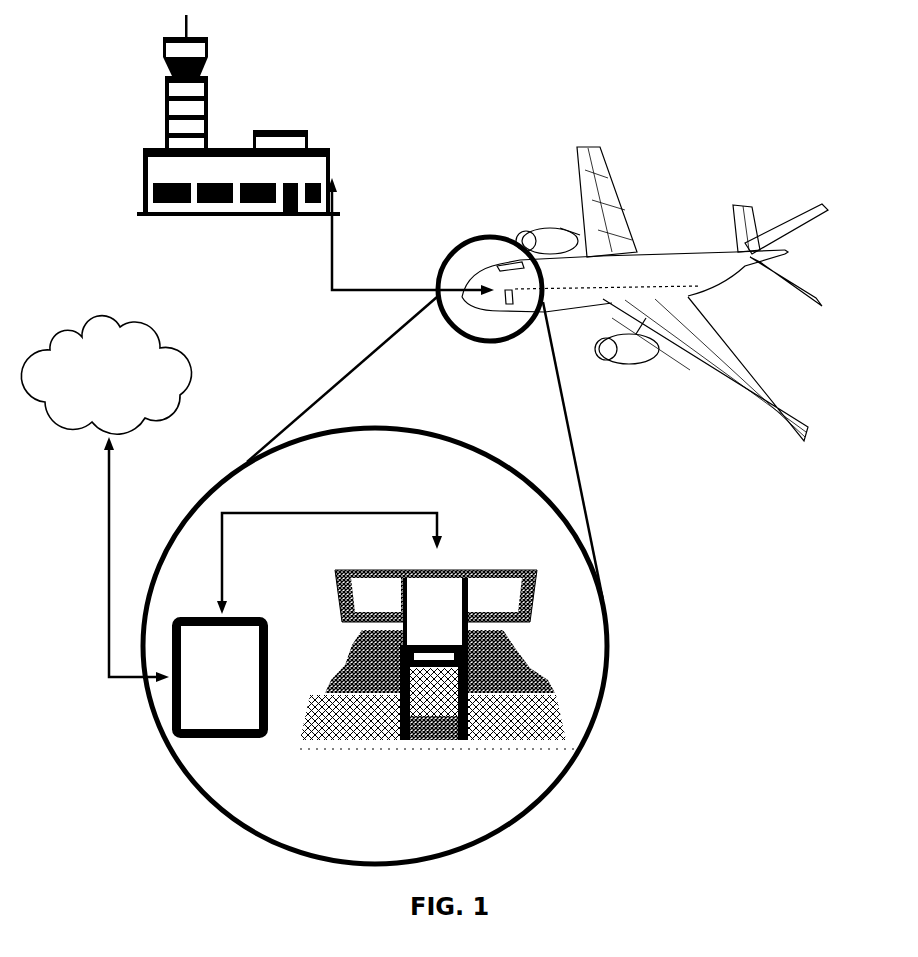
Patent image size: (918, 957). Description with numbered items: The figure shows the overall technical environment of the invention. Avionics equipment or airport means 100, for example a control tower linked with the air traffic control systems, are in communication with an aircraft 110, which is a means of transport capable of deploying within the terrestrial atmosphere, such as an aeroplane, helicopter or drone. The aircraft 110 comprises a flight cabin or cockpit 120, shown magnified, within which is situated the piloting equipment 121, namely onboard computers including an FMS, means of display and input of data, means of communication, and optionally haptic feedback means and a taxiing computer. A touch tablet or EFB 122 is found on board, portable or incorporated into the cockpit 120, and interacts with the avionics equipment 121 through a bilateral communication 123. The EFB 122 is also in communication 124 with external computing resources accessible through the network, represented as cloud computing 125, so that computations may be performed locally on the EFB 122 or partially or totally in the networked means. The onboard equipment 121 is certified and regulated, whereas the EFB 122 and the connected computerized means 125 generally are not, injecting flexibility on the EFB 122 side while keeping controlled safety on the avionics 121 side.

The avionics equipment or airport means 100 is at (220, 35).
The aircraft 110 is at (615, 153).
The cockpit 120 is at (450, 253).
The piloting equipment 121 is at (488, 563).
The EFB 122 is at (242, 603).
The bilateral communication 123 is at (320, 509).
The communication 124 is at (110, 552).
The cloud computing 125 is at (130, 322).